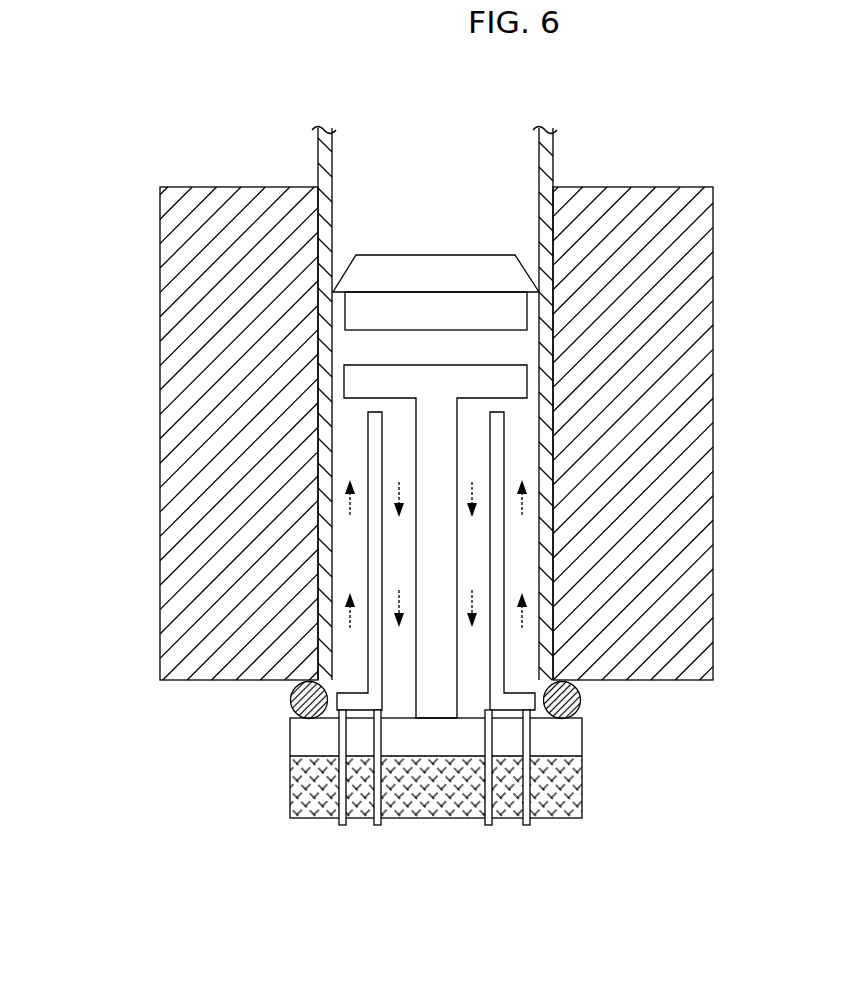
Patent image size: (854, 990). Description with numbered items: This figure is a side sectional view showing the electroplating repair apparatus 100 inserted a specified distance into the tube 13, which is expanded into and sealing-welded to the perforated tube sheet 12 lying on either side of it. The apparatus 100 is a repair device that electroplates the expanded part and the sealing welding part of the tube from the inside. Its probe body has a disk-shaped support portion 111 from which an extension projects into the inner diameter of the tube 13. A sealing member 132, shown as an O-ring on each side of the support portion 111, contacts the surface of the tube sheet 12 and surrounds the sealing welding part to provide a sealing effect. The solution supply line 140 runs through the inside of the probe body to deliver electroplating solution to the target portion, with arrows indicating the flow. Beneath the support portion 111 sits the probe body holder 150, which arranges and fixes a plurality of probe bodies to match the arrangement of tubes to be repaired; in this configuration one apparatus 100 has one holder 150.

The electroplating repair apparatus 100 is at (455, 245).
The inner tube 13 is at (328, 207).
The tube sheet 12 is at (217, 680).
The sealing member 132 is at (289, 698).
The support portion 111 is at (578, 739).
The probe body holder 150 is at (582, 798).
The solution supply line 140 is at (485, 827).